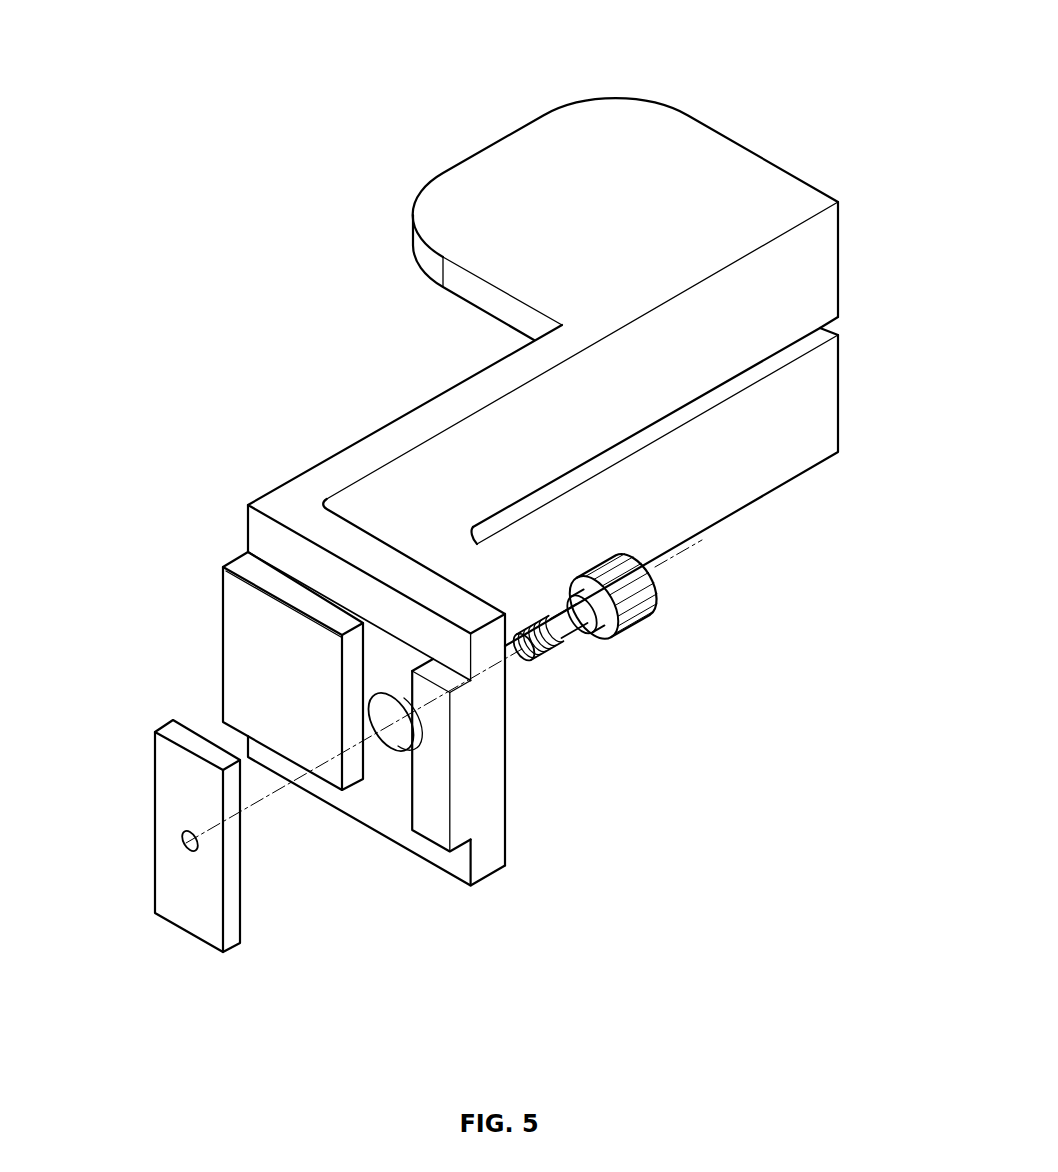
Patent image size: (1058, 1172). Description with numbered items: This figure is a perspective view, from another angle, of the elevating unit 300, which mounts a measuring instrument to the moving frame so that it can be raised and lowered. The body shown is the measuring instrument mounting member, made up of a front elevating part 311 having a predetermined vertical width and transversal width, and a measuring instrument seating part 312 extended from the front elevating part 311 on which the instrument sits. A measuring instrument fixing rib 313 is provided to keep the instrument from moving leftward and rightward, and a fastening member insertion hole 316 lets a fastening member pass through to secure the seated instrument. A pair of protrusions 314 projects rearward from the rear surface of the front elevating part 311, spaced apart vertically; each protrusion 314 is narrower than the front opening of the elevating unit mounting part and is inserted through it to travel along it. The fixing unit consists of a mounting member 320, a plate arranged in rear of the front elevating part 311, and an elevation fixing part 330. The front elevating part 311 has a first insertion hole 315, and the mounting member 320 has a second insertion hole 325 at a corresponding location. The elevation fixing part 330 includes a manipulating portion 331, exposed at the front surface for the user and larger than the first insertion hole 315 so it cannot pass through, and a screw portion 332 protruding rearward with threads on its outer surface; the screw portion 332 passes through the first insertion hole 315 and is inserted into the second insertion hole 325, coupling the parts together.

The elevating unit 300 is at (408, 172).
The front elevating part 311 is at (337, 540).
The measuring instrument seating part 312 is at (535, 464).
The measuring instrument fixing rib 313 is at (642, 132).
The protrusion 314 is at (235, 627).
The first insertion hole 315 is at (392, 755).
The fastening member insertion hole 316 is at (835, 331).
The mounting member 320 is at (153, 778).
The second insertion hole 325 is at (181, 842).
The elevation fixing part 330 is at (683, 696).
The manipulating portion 331 is at (637, 620).
The screw portion 332 is at (561, 645).